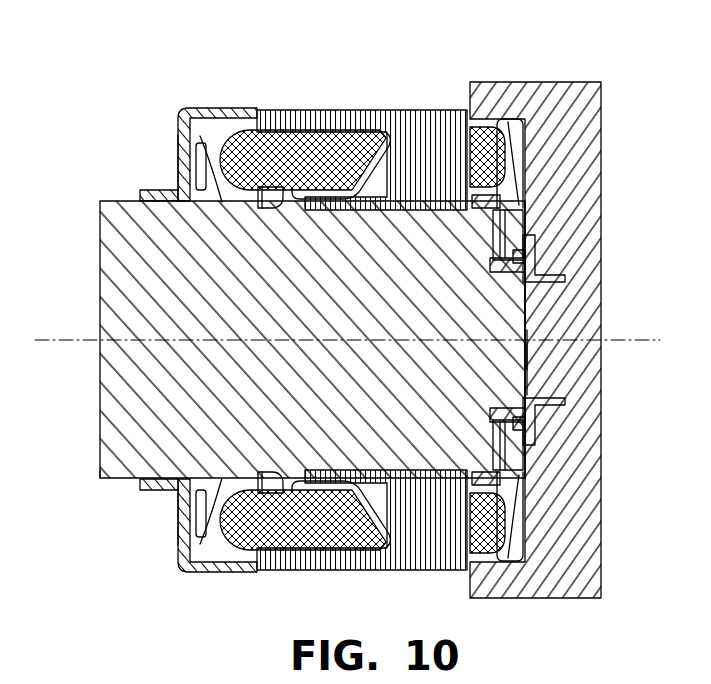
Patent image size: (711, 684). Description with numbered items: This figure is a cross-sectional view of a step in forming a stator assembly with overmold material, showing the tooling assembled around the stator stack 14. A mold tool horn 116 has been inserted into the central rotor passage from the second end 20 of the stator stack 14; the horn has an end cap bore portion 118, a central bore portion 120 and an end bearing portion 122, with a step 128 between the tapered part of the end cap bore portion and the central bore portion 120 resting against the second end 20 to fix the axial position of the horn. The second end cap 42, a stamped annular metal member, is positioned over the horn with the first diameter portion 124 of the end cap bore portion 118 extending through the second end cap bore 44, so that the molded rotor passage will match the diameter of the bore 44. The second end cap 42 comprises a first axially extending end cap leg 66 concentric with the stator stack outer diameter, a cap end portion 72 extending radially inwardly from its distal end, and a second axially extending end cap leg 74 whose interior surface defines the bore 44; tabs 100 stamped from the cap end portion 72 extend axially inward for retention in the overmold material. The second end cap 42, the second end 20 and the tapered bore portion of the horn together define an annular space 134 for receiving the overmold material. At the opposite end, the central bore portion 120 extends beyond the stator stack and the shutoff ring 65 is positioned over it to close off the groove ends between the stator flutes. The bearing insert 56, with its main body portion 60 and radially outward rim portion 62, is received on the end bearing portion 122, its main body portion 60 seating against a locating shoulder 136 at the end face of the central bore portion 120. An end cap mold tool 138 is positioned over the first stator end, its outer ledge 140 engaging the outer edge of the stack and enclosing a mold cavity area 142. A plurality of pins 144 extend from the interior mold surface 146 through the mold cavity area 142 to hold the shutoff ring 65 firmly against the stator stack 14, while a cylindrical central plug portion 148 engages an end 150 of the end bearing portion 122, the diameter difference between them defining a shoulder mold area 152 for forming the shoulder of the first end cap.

The stator stack 14 is at (433, 575).
The second end of the stator stack 20 is at (181, 113).
The second end cap 42 is at (199, 577).
The second end cap bore 44 is at (138, 222).
The bearing insert 56 is at (516, 446).
The main body portion 60 is at (532, 394).
The rim portion 62 is at (530, 416).
The shutoff ring 65 is at (520, 201).
The first axially extending end cap leg 66 is at (237, 572).
The cap end portion 72 is at (177, 545).
The second axially extending end cap leg 74 is at (153, 497).
The tabs 100 is at (198, 182).
The mold tool horn 116 is at (96, 462).
The end cap bore portion 118 is at (128, 199).
The central bore portion 120 is at (510, 477).
The end bearing portion 122 is at (517, 330).
The first diameter portion 124 is at (110, 482).
The step 128 is at (279, 198).
The annular space 134 is at (208, 124).
The locating shoulder 136 is at (556, 245).
The end cap mold tool 138 is at (586, 78).
The outer ledge 140 is at (463, 99).
The mold cavity area 142 is at (512, 124).
The pins 144 is at (513, 187).
The interior mold surface 146 is at (520, 553).
The central plug portion 148 is at (520, 346).
The end of the end bearing portion 150 is at (528, 364).
The shoulder mold area 152 is at (530, 263).